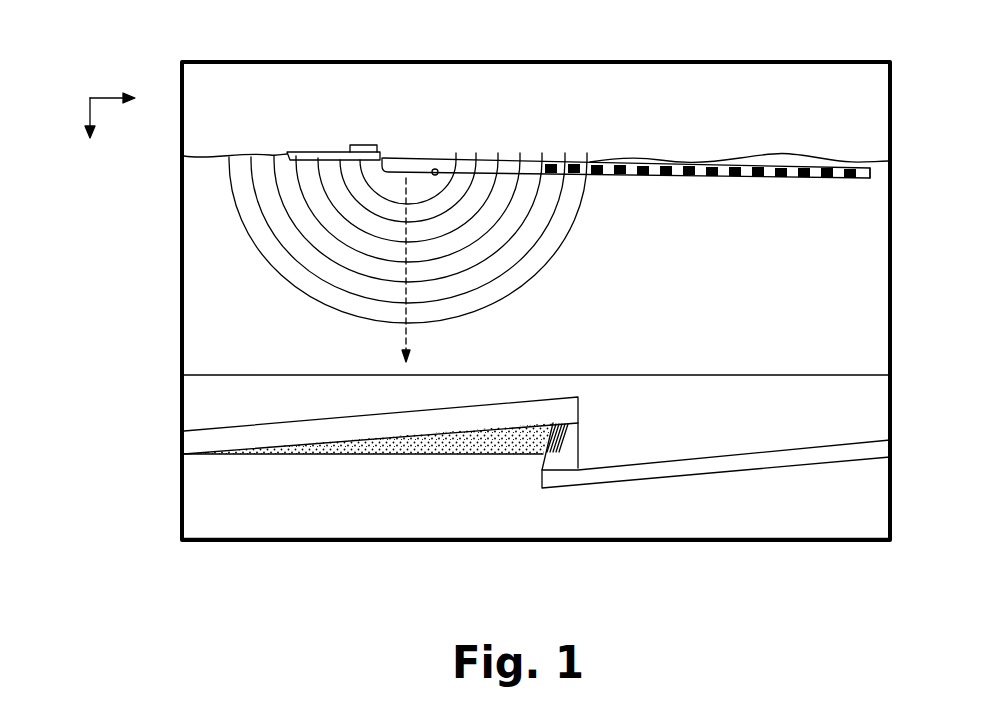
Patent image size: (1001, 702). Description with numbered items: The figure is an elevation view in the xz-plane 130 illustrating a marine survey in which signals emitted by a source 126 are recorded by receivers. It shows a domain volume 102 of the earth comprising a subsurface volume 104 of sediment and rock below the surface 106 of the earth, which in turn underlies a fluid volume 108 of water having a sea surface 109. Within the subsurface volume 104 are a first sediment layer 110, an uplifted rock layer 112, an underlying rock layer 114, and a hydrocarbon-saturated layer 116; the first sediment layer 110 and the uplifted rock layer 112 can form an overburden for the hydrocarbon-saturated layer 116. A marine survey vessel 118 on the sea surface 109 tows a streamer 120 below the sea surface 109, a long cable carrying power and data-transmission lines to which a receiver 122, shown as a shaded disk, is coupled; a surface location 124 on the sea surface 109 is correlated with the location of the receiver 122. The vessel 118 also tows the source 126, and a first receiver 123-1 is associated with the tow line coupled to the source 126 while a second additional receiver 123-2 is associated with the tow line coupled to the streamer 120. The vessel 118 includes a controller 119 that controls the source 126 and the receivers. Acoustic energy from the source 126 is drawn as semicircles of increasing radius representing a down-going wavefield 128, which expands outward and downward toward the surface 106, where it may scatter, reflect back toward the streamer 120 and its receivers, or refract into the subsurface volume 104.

The domain volume 102 is at (150, 207).
The subsurface volume 104 is at (202, 398).
The surface 106 is at (232, 375).
The fluid volume 108 is at (200, 293).
The sea surface 109 is at (658, 158).
The first sediment layer 110 is at (770, 423).
The uplifted rock layer 112 is at (197, 447).
The underlying rock layer 114 is at (285, 528).
The hydrocarbon-saturated layer 116 is at (372, 457).
The marine survey vessel 118 is at (325, 152).
The controller 119 is at (395, 158).
The streamer 120 is at (701, 193).
The receiver 122 is at (803, 178).
The first receiver 123-1 is at (393, 162).
The second additional receiver 123-2 is at (437, 170).
The surface location 124 is at (806, 160).
The source 126 is at (408, 160).
The down-going wavefield 128 is at (554, 254).
The xz-plane 130 is at (90, 98).